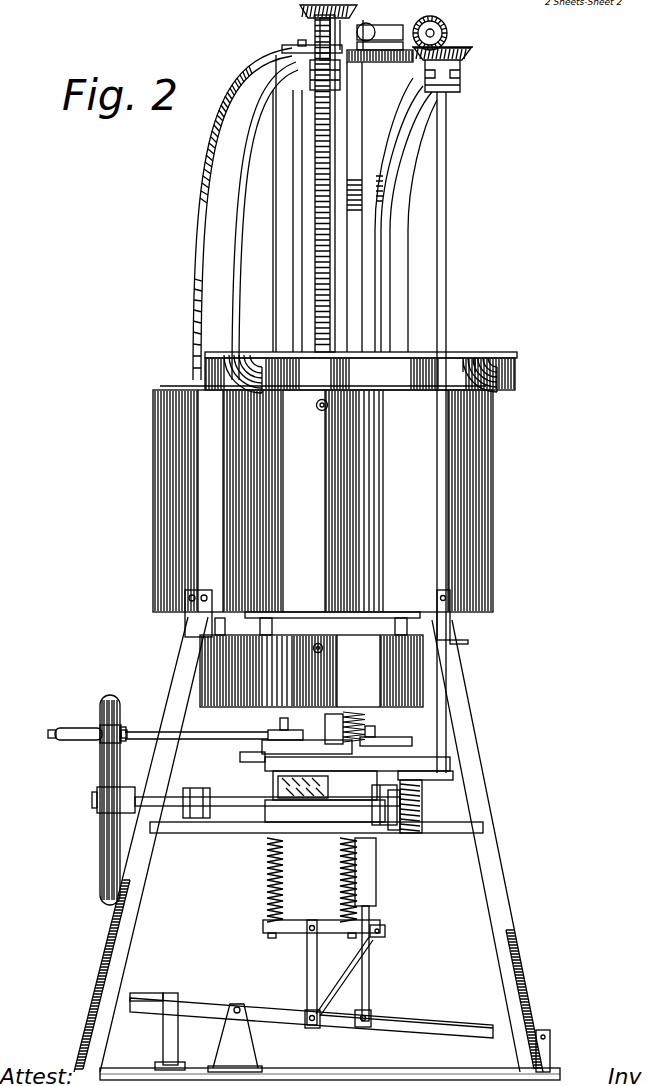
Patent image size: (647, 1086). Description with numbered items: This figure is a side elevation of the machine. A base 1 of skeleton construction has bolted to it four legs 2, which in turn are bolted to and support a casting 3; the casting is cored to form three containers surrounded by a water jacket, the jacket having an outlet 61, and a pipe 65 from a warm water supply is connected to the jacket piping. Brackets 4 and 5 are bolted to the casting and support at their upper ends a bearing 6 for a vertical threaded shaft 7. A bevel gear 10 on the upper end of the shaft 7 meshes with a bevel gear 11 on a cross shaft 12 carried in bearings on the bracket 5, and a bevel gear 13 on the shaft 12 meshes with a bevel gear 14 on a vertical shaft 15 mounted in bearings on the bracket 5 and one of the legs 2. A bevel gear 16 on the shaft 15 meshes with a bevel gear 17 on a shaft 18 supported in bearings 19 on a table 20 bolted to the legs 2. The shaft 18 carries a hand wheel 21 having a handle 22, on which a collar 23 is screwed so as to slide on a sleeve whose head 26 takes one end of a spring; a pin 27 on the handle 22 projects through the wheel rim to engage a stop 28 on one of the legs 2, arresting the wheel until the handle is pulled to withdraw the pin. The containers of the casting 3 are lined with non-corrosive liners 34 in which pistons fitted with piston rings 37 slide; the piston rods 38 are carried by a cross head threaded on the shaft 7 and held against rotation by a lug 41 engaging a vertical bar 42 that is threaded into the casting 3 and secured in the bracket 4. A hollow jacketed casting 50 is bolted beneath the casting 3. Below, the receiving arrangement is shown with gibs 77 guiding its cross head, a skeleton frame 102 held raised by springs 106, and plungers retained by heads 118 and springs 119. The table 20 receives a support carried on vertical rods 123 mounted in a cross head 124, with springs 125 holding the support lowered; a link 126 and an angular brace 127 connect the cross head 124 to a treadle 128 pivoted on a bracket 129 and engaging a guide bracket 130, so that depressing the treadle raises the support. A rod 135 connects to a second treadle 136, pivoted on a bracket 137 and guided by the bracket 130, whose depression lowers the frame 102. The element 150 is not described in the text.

The base 1 is at (415, 1076).
The legs 2 is at (125, 927).
The casting 3 is at (323, 499).
The bracket 4 is at (212, 240).
The bracket 5 is at (406, 186).
The bearing 6 is at (290, 50).
The vertical threaded shaft 7 is at (334, 250).
The bevel gear 10 is at (320, 20).
The bevel gear 11 is at (356, 22).
The cross shaft 12 is at (382, 30).
The bevel gear 13 is at (442, 24).
The bevel gear 14 is at (464, 52).
The vertical shaft 15 is at (444, 210).
The bevel gear 16 is at (452, 773).
The bevel gear 17 is at (405, 828).
The shaft 18 is at (258, 802).
The bearings 19 is at (204, 790).
The table 20 is at (213, 835).
The hand wheel 21 is at (99, 800).
The handle 22 is at (80, 728).
The collar 23 is at (106, 726).
The head 26 is at (50, 733).
The pin 27 is at (126, 732).
The stop 28 is at (106, 875).
The liners 34 is at (458, 352).
The piston rings 37 is at (360, 374).
The piston rods 38 is at (276, 238).
The lug 41 is at (290, 120).
The vertical bar 42 is at (297, 180).
The hollow casting 50 is at (311, 671).
The outlet 61 is at (320, 411).
The pipe 65 is at (323, 648).
The gibs 77 is at (390, 735).
The skeleton frame 102 is at (403, 772).
The spring 106 is at (362, 728).
The head 118 is at (282, 726).
The spring 119 is at (268, 737).
The vertical rods 123 is at (283, 856).
The cross head 124 is at (310, 911).
The springs 125 is at (341, 880).
The link 126 is at (310, 978).
The angular brace 127 is at (355, 966).
The treadle 128 is at (287, 1004).
The bracket 129 is at (250, 998).
The guide bracket 130 is at (173, 995).
The rod 135 is at (360, 977).
The treadle 136 is at (434, 1026).
The bracket 137 is at (545, 1045).
The elbow bracket 150 is at (500, 353).